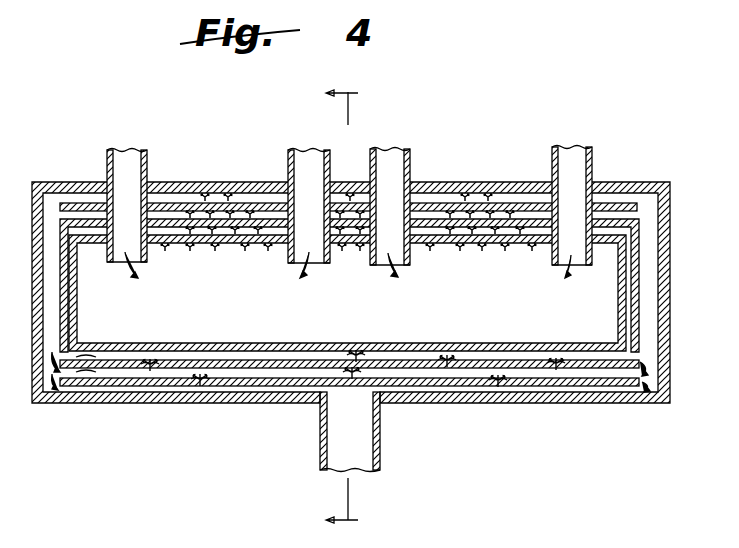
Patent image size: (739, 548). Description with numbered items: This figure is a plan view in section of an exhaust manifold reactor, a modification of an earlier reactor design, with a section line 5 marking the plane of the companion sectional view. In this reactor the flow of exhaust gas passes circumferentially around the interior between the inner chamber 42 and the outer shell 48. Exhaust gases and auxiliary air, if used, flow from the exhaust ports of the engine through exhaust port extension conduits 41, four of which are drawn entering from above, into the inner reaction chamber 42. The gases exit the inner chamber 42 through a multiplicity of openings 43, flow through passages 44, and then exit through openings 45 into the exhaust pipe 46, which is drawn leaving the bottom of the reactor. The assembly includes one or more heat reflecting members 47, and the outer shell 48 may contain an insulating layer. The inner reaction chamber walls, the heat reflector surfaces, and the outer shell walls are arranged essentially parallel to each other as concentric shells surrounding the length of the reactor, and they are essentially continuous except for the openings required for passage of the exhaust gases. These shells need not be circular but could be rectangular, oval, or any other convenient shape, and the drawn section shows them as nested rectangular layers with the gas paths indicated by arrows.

The section line 5 is at (347, 310).
The exhaust port extension conduits 41 is at (149, 159).
The inner reaction chamber 42 is at (528, 344).
The openings 43 is at (218, 200).
The passages 44 is at (612, 226).
The openings 45 is at (150, 366).
The exhaust pipe 46 is at (383, 450).
The heat reflecting members 47 is at (598, 362).
The outer shell 48 is at (452, 400).